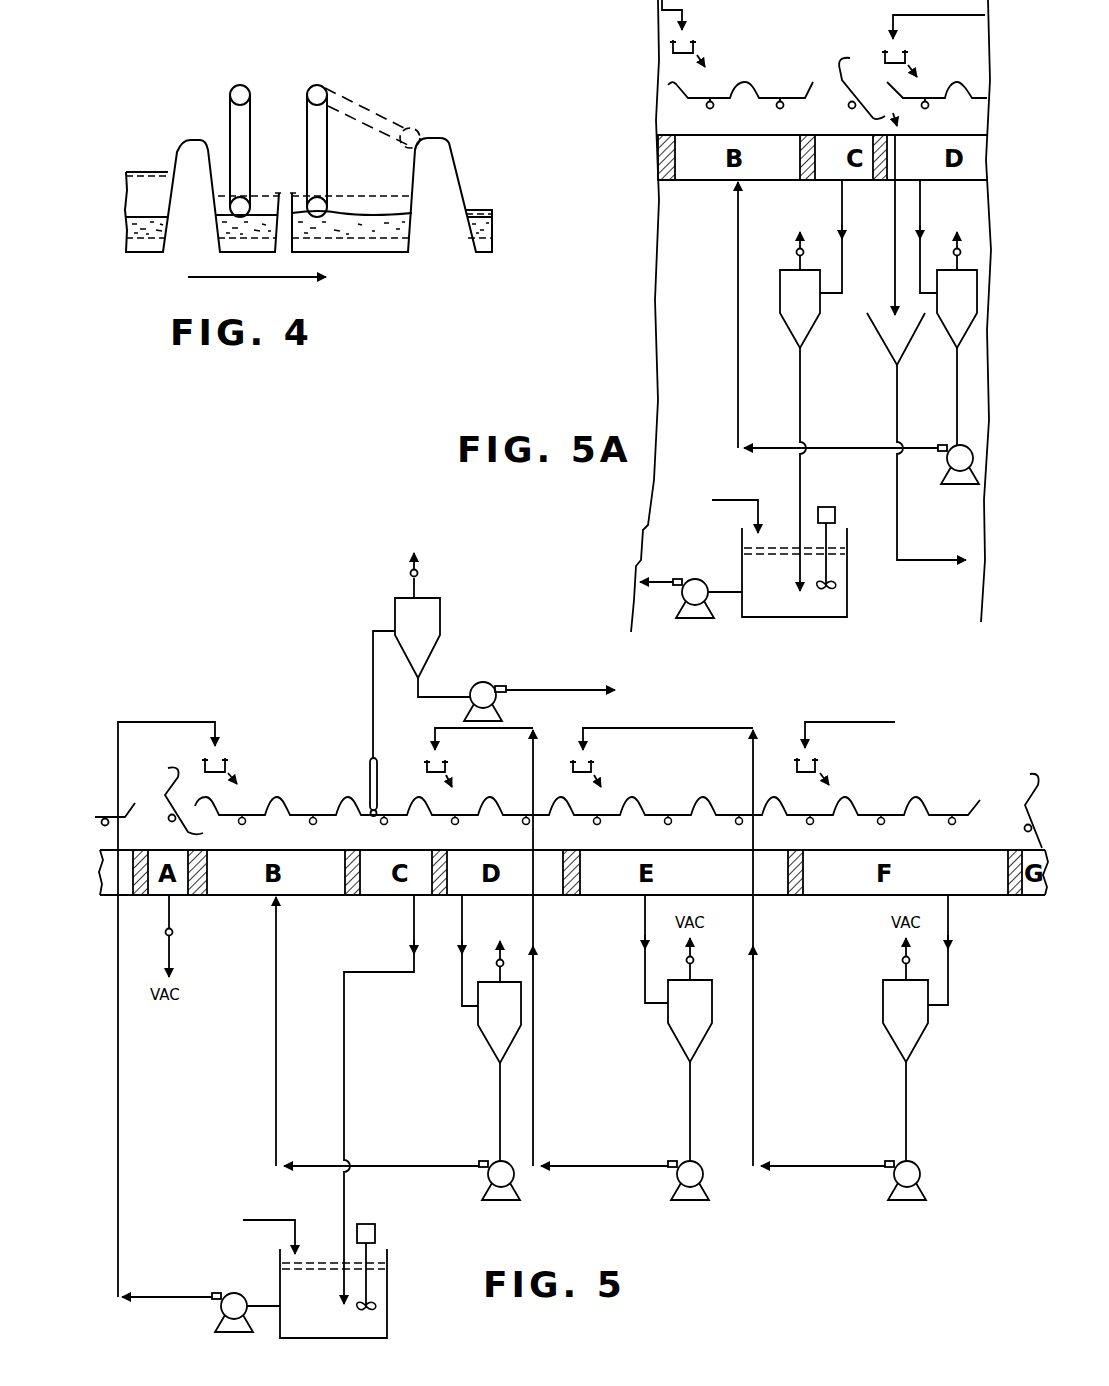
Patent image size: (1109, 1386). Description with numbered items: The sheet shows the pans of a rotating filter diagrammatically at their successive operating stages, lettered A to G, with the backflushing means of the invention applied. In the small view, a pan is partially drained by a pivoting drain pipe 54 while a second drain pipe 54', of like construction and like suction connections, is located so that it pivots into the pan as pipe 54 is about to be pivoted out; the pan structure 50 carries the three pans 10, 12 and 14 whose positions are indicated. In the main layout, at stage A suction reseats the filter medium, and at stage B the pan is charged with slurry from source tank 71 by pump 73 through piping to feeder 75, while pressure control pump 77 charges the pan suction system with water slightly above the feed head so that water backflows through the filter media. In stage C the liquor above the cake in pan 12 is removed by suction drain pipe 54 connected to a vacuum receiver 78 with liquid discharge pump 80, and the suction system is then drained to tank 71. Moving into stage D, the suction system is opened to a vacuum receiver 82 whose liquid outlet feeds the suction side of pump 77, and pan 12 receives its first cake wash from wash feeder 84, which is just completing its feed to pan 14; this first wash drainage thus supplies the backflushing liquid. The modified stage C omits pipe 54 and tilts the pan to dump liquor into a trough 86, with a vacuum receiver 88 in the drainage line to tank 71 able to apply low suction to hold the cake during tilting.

In FIG. 4, the pan 10 is at (141, 257).
In FIG. 5, the pan 10 is at (331, 821).
In FIG. 4, the pan 12 is at (313, 255).
In FIG. 5, the pan 12 is at (371, 821).
In FIG. 4, the pan 14 is at (482, 262).
In FIG. 5, the pan 14 is at (447, 821).
In FIG. 4, the corrugated carrier tray 50 is at (193, 142).
In FIG. 4, the drain pipe 54 is at (278, 151).
In FIG. 5, the drain pipe 54 is at (354, 781).
In FIG. 4, the second drain pipe 54' is at (372, 112).
In FIG. 5A, the source tank 71 is at (847, 551).
In FIG. 5, the source tank 71 is at (388, 1268).
In FIG. 5A, the pump 73 is at (691, 580).
In FIG. 5, the pump 73 is at (232, 1293).
In FIG. 5A, the feeder 75 is at (687, 33).
In FIG. 5, the feeder 75 is at (230, 755).
In FIG. 5A, the pressure control pump 77 is at (946, 463).
In FIG. 5, the pressure control pump 77 is at (515, 1184).
In FIG. 5, the vacuum receiver 78 is at (441, 620).
In FIG. 5, the liquid discharge pump 80 is at (492, 684).
In FIG. 5A, the vacuum receiver 82 is at (948, 312).
In FIG. 5, the vacuum receiver 82 is at (491, 1028).
In FIG. 5A, the wash feeder 84 is at (878, 49).
In FIG. 5, the wash feeder 84 is at (446, 755).
In FIG. 5A, the trough 86 is at (880, 340).
In FIG. 5A, the vacuum receiver 88 is at (811, 385).